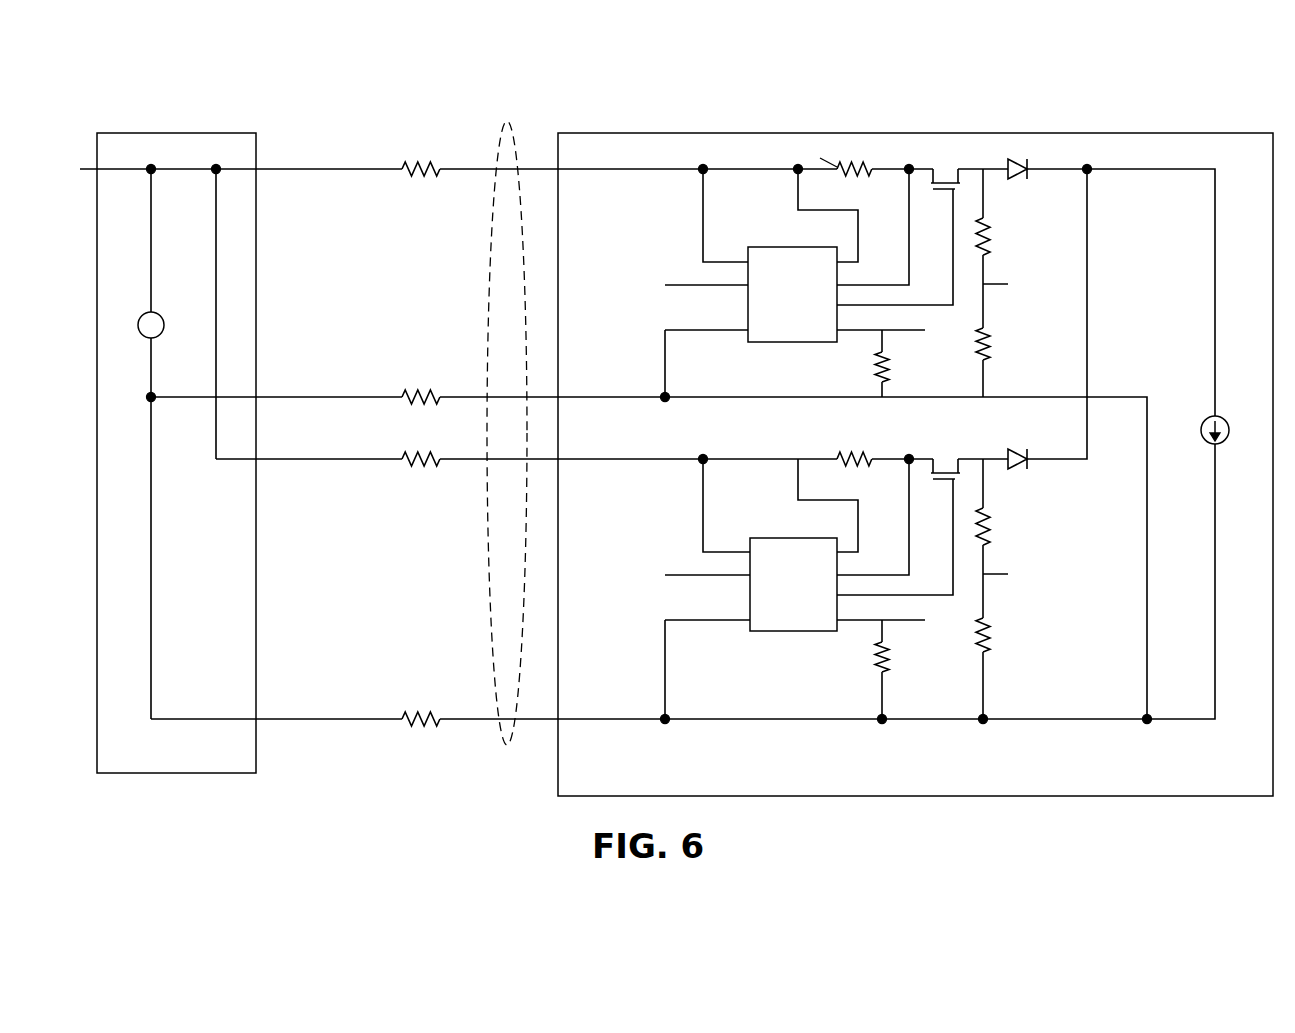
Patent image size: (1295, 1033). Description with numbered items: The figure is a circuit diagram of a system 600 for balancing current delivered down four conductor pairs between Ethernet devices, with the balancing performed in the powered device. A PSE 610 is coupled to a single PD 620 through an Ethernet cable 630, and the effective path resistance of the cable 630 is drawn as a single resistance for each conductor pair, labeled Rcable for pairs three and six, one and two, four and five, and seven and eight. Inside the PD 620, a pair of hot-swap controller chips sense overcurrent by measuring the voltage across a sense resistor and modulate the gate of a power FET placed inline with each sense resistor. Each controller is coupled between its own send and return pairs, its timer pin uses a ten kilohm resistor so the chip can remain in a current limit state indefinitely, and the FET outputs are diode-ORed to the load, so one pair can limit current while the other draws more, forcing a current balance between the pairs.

The system 600 is at (316, 99).
The PSE 610 is at (112, 132).
The PD 620 is at (1168, 131).
The Ethernet cable 630 is at (500, 126).